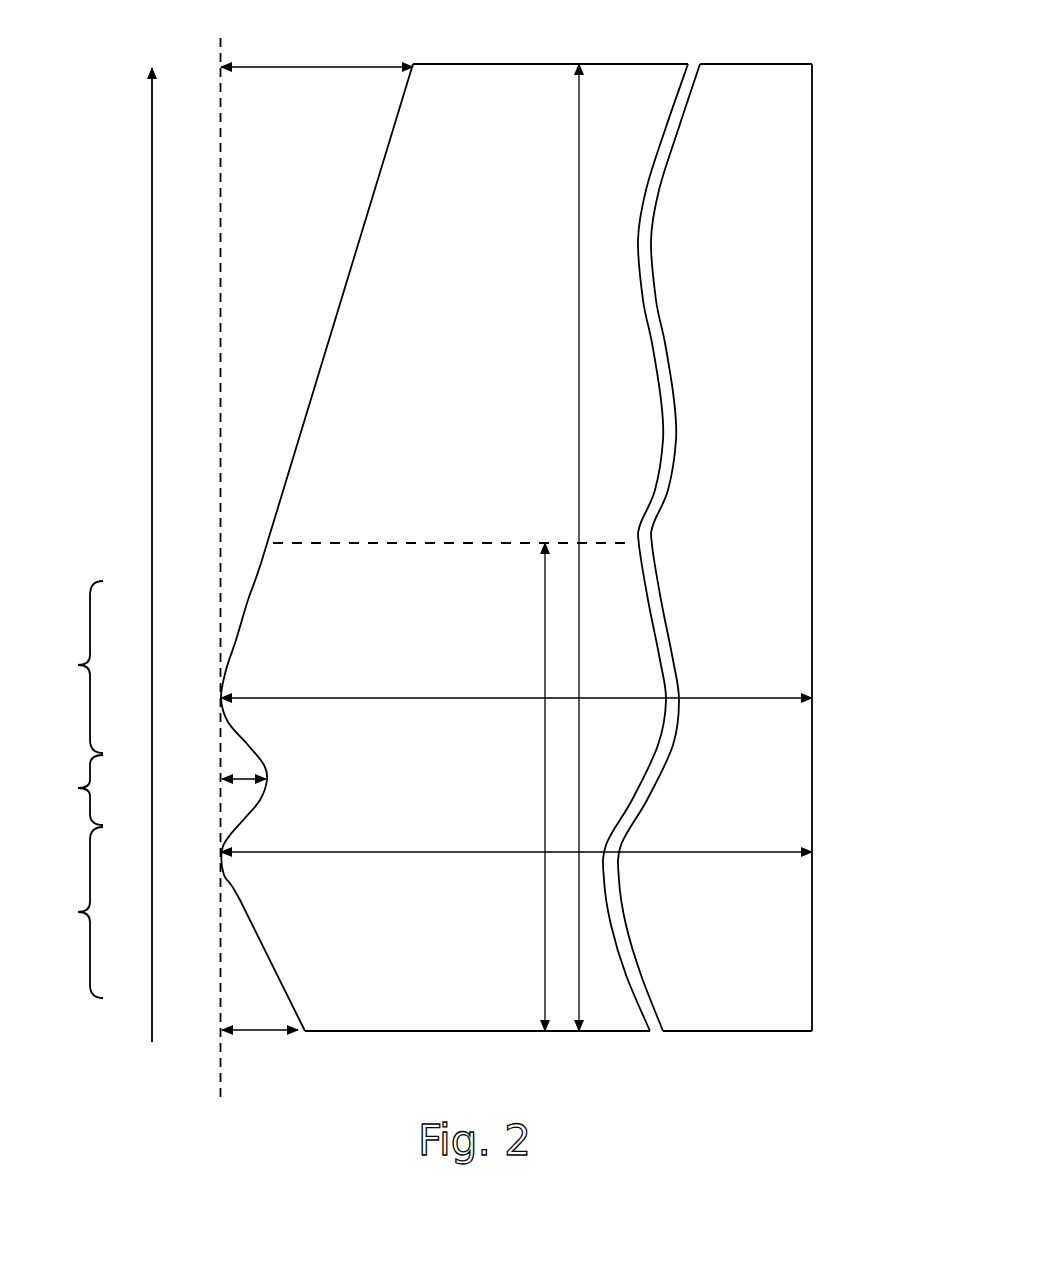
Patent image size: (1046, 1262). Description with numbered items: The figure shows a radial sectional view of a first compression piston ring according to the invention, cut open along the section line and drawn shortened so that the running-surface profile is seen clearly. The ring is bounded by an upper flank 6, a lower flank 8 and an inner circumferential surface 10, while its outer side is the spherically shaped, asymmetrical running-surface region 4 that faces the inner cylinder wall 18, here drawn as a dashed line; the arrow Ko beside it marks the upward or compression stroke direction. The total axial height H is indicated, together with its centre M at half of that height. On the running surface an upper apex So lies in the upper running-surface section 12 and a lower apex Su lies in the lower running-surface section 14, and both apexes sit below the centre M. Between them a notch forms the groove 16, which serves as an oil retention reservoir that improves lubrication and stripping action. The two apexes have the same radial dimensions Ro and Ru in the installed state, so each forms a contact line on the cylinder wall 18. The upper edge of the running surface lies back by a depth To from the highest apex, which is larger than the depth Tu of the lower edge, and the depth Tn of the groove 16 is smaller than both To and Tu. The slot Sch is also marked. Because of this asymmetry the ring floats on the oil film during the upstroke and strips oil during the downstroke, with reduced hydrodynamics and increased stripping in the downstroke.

The running-surface region 4 is at (333, 303).
The upper flank 6 is at (528, 62).
The lower flank 8 is at (492, 1033).
The inner circumferential surface 10 is at (815, 525).
The upper running-surface section 12 is at (61, 667).
The lower running-surface section 14 is at (61, 912).
The groove 16 is at (61, 790).
The inner cylinder wall 18 is at (223, 163).
The upstroke direction Ko is at (150, 417).
The slot Sch is at (655, 1035).
The depth of the upper edge To is at (317, 50).
The depth of the groove Tn is at (240, 786).
The depth of the lower edge Tu is at (260, 1048).
The radial dimension of the upper apex Ro is at (516, 686).
The radial dimension of the lower apex Ru is at (516, 870).
The total height H is at (563, 547).
The centre M is at (451, 771).
The upper apex So is at (230, 688).
The lower apex Su is at (230, 860).